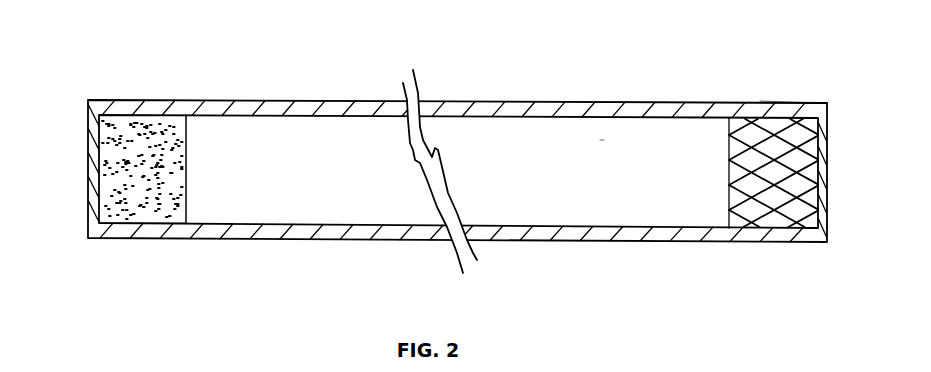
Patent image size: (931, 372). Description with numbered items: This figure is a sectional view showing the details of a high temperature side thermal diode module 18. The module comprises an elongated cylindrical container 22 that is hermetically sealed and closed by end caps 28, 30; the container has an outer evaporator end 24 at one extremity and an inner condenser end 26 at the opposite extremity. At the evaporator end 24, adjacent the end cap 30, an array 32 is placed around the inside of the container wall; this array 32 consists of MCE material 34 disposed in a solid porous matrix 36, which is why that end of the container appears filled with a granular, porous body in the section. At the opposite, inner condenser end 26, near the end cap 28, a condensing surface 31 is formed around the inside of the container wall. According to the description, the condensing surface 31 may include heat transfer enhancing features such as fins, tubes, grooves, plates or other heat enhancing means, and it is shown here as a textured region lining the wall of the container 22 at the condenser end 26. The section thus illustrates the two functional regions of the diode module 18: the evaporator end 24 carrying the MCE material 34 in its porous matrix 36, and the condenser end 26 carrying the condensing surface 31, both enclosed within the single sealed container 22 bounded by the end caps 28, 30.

The high temperature side thermal diode module 18 is at (603, 133).
The elongated cylindrical container 22 is at (323, 103).
The outer evaporator end 24 is at (134, 99).
The inner condenser end 26 is at (790, 103).
The end cap 28 is at (820, 209).
The end cap 30 is at (87, 135).
The condensing surface 31 is at (757, 207).
The array 32 is at (188, 158).
The MCE material 34 is at (143, 205).
The solid porous matrix 36 is at (170, 210).